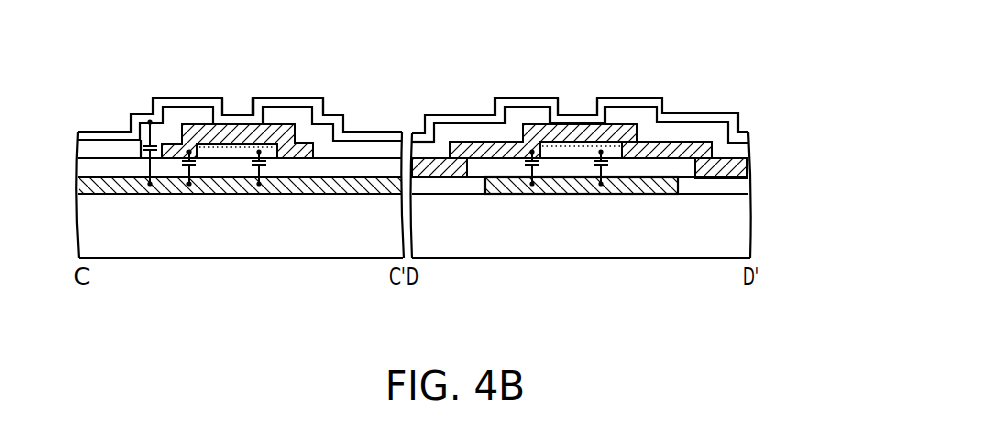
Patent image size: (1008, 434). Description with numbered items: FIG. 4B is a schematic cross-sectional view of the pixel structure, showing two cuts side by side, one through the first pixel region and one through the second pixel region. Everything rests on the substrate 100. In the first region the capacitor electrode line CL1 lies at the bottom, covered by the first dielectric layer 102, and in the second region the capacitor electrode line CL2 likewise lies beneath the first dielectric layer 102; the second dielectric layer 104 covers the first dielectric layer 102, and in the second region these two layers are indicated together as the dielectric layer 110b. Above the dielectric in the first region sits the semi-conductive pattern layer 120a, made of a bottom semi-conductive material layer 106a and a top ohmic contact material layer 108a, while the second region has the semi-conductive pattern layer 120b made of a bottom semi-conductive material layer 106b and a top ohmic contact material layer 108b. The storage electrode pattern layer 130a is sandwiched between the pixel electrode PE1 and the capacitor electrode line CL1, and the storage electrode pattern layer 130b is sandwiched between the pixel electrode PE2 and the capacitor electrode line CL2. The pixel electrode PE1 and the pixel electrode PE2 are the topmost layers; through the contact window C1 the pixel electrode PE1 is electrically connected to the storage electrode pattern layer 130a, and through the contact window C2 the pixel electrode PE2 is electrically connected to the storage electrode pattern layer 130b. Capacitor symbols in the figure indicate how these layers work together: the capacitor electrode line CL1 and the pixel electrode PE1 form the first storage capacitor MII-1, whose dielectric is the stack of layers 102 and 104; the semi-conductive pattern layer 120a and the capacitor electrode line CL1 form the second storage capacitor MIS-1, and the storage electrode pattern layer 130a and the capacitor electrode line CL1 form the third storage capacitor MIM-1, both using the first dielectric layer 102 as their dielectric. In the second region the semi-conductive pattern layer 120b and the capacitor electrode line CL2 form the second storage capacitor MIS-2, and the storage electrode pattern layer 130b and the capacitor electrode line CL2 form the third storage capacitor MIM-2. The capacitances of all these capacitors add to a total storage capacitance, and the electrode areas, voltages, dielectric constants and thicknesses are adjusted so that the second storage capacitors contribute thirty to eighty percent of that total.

The substrate 100 is at (737, 230).
The first dielectric layer 102 is at (742, 188).
The second dielectric layer 104 is at (720, 132).
The dielectric layer 110b is at (441, 99).
The semi-conductive pattern layer 120a is at (240, 83).
The top ohmic contact material layer 108a is at (160, 100).
The bottom semi-conductive material layer 106a is at (237, 101).
The semi-conductive pattern layer 120b is at (579, 91).
The top ohmic contact material layer 108b is at (630, 147).
The bottom semi-conductive material layer 106b is at (640, 135).
The storage electrode pattern layer 130a is at (295, 136).
The storage electrode pattern layer 130b is at (466, 140).
The pixel electrode PE1 is at (283, 103).
The pixel electrode PE2 is at (528, 98).
The contact window C1 is at (227, 115).
The contact window C2 is at (568, 112).
The capacitor electrode line CL1 is at (317, 194).
The capacitor electrode line CL2 is at (488, 194).
The first storage capacitor MII-1 is at (148, 187).
The third storage capacitor MIM-1 is at (190, 186).
The second storage capacitor MIS-1 is at (261, 187).
The third storage capacitor MIM-2 is at (534, 187).
The second storage capacitor MIS-2 is at (603, 187).